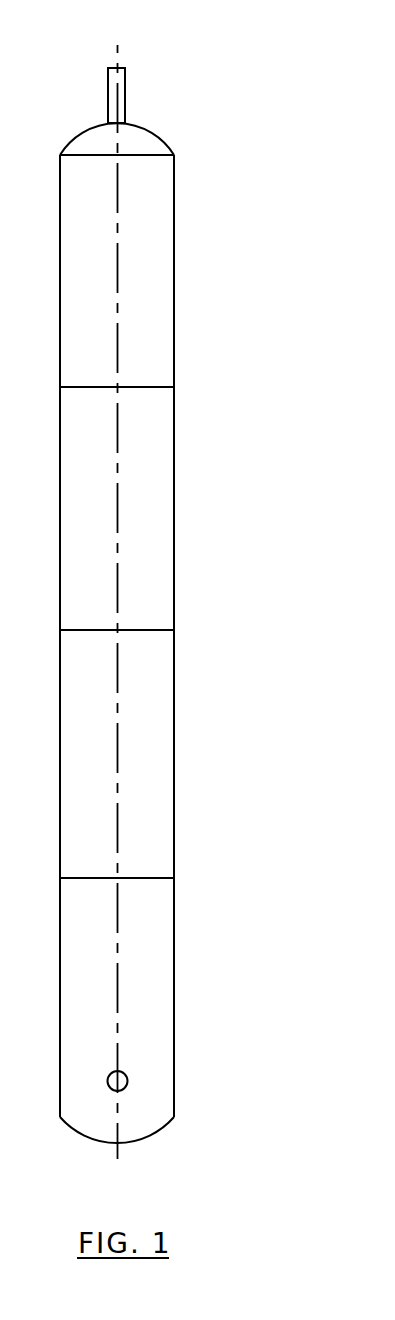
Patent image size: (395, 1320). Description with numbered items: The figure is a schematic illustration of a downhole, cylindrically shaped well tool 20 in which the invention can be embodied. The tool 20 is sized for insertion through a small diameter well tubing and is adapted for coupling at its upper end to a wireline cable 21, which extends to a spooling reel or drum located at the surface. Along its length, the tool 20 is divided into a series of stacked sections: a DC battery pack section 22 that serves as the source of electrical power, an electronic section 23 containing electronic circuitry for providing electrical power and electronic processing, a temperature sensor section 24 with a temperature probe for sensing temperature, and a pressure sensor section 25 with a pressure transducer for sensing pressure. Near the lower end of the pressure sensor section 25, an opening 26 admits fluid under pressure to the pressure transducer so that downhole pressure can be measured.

The well tool 20 is at (180, 602).
The wireline cable 21 is at (125, 95).
The DC battery pack section 22 is at (174, 267).
The electronic section 23 is at (174, 478).
The temperature sensor section 24 is at (174, 823).
The pressure sensor section 25 is at (179, 1010).
The opening 26 is at (128, 1081).